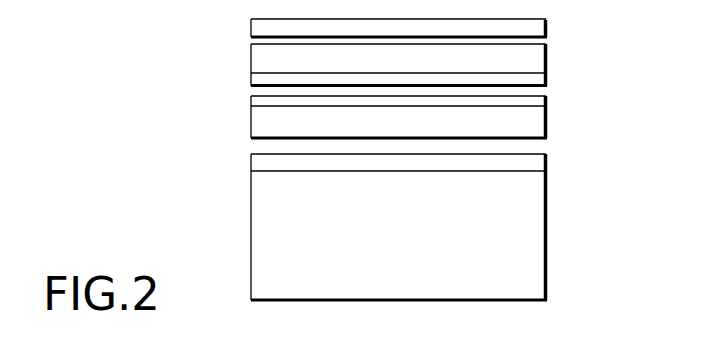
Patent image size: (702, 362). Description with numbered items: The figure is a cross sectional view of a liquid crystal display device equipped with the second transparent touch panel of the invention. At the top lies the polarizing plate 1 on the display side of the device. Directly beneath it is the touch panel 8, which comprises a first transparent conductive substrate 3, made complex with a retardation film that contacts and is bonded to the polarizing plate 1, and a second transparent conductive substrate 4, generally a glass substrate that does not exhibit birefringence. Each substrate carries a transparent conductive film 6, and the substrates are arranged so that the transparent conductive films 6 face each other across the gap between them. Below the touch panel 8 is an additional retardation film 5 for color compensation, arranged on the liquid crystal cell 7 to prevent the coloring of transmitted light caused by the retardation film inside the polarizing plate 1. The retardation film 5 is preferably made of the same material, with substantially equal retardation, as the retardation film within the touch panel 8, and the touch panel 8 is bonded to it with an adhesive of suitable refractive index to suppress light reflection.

The polarizing plate 1 is at (546, 27).
The first transparent conductive substrate 3 is at (540, 62).
The second transparent conductive substrate 4 is at (540, 131).
The retardation film 5 is at (540, 164).
The transparent conductive film 6 is at (546, 81).
The liquid crystal cell 7 is at (422, 225).
The touch panel 8 is at (399, 94).